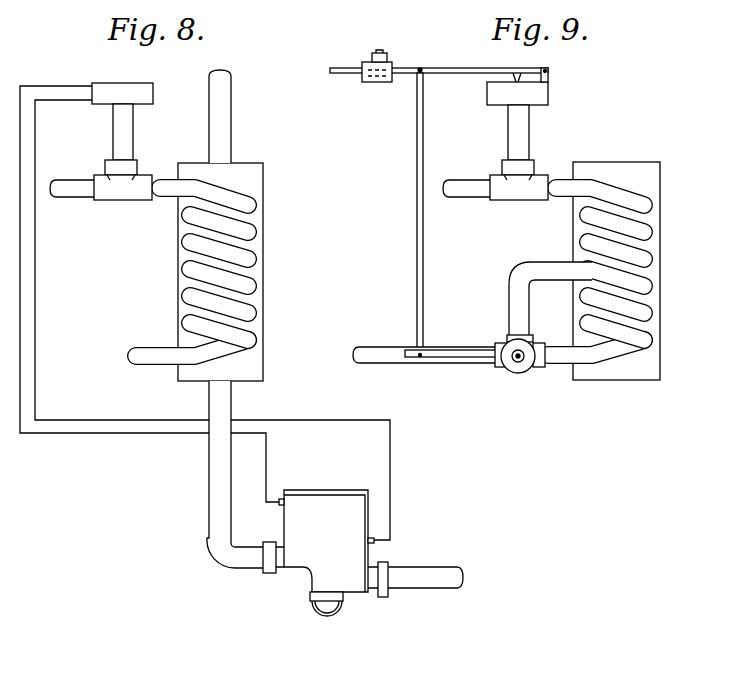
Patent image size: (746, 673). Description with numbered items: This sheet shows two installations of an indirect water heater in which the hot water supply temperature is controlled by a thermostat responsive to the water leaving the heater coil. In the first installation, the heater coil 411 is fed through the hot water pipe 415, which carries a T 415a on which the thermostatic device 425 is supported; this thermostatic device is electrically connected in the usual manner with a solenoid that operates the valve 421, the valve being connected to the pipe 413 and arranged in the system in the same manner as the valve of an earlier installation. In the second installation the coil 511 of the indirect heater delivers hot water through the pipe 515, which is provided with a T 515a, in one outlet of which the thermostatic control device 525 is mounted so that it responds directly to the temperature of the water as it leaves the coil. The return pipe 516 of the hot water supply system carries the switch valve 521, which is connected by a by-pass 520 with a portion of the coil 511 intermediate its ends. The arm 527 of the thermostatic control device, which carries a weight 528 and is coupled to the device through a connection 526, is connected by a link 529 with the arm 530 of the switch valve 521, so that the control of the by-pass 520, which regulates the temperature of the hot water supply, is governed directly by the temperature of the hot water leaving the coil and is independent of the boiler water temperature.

In FIG. 8, the coil 411 is at (178, 259).
In FIG. 8, the pipe 413 is at (212, 485).
In FIG. 8, the hot water pipe 415 is at (70, 190).
In FIG. 8, the T 415a is at (133, 188).
In FIG. 8, the valve 421 is at (360, 513).
In FIG. 8, the thermostatic device 425 is at (133, 87).
In FIG. 9, the coil 511 is at (660, 277).
In FIG. 9, the pipe 515 is at (470, 190).
In FIG. 9, the T 515a is at (530, 193).
In FIG. 9, the return pipe 516 is at (370, 346).
In FIG. 9, the by-pass 520 is at (509, 297).
In FIG. 9, the switch valve 521 is at (522, 375).
In FIG. 9, the thermostatic control device 525 is at (543, 95).
In FIG. 9, the connecting link 526 is at (518, 72).
In FIG. 9, the arm 527 is at (340, 76).
In FIG. 9, the weight 528 is at (393, 62).
In FIG. 9, the link 529 is at (416, 207).
In FIG. 9, the arm 530 is at (467, 358).